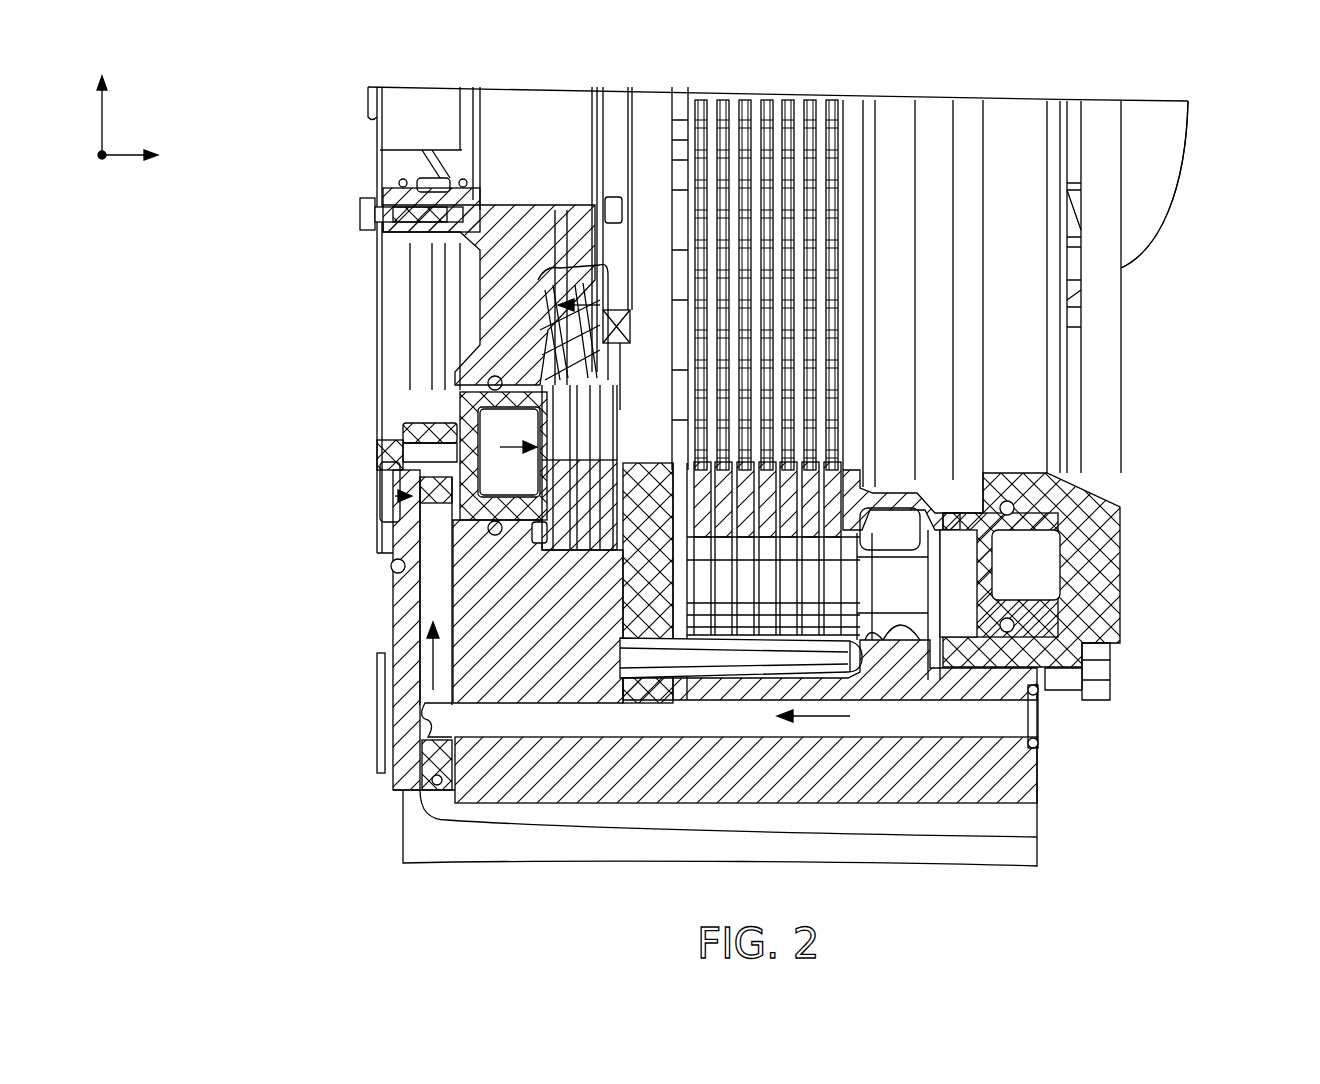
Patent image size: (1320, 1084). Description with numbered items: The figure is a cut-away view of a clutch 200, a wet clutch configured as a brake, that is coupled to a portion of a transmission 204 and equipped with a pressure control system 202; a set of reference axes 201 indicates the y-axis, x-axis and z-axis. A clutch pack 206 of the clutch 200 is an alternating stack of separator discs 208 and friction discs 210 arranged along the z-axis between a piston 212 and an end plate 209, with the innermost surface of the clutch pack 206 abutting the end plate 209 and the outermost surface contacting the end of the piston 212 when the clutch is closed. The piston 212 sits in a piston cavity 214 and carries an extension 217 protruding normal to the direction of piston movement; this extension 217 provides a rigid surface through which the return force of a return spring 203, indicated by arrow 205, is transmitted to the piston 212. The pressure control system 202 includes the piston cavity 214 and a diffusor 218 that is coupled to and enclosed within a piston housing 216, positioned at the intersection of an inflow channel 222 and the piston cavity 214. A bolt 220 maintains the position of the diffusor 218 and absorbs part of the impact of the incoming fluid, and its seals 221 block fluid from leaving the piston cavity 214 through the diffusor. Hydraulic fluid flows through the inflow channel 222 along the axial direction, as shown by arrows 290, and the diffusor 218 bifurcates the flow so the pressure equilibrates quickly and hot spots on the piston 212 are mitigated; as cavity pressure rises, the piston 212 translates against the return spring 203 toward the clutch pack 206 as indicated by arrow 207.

The clutch 200 is at (522, 652).
The set of reference axes 201 is at (140, 118).
The pressure control system 202 is at (398, 497).
The return spring 203 is at (558, 343).
The transmission 204 is at (1262, 125).
The arrow 205 is at (602, 305).
The clutch pack 206 is at (573, 597).
The arrow 207 is at (500, 447).
The separator discs 208 is at (547, 533).
The end plate 209 is at (643, 607).
The friction discs 210 is at (583, 523).
The piston 212 is at (473, 430).
The piston cavity 214 is at (448, 492).
The piston housing 216 is at (478, 344).
The extension 217 is at (530, 382).
The diffusor 218 is at (433, 433).
The bolt 220 is at (385, 452).
The seals 221 is at (388, 475).
The inflow channel 222 is at (425, 683).
The arrows 290 is at (443, 668).